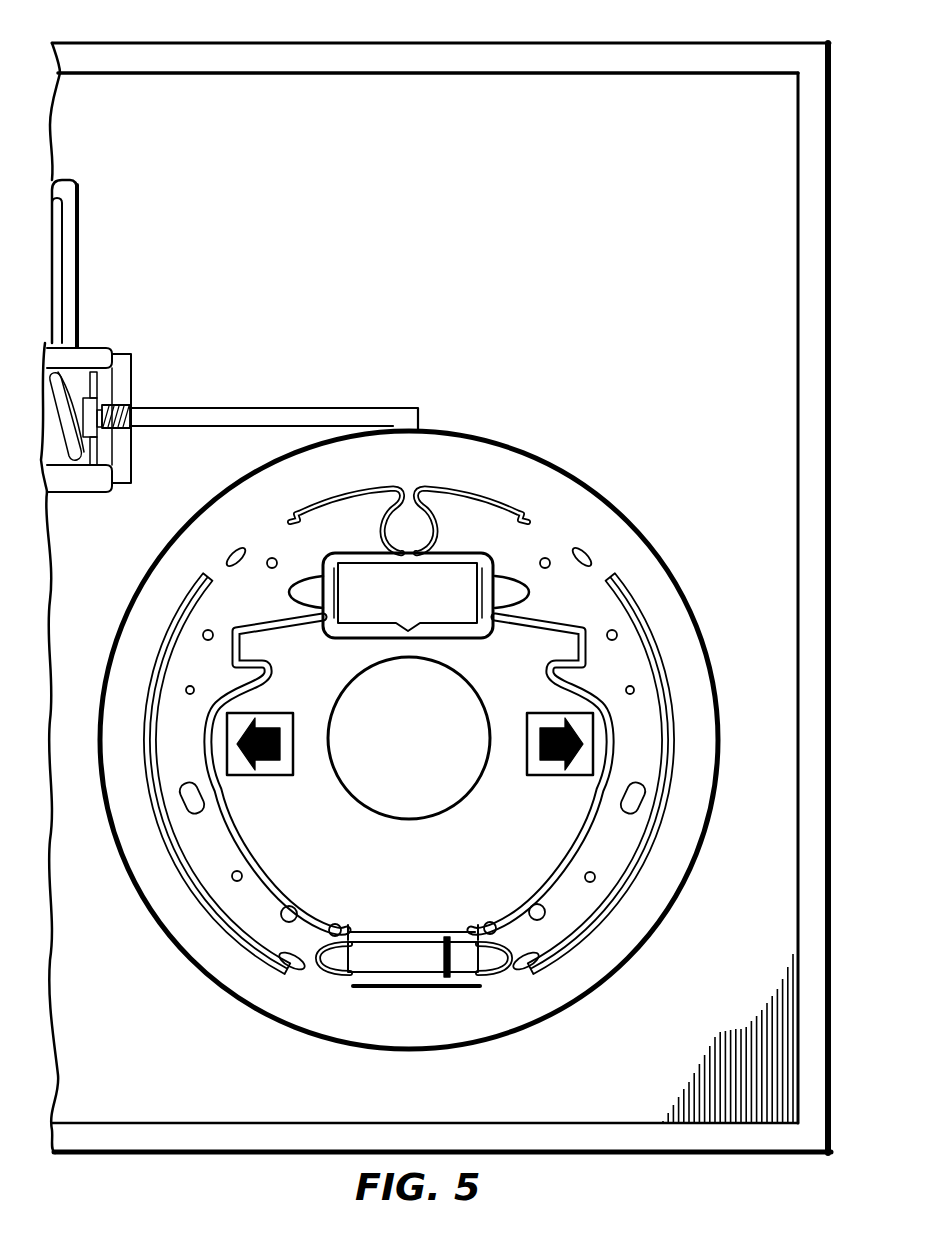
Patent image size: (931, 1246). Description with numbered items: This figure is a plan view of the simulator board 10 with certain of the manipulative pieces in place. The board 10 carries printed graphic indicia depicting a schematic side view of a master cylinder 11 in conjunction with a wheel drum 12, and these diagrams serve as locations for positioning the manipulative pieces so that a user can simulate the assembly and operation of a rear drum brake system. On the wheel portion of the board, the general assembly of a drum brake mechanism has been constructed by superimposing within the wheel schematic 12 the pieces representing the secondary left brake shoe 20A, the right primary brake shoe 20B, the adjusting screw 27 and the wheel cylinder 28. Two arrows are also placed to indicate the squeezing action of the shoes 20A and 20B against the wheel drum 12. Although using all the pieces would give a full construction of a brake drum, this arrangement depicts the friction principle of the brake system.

The simulator board 10 is at (582, 36).
The master cylinder 11 is at (80, 250).
The wheel drum 12 is at (573, 478).
The secondary left brake shoe 20A is at (190, 590).
The right primary brake shoe 20B is at (622, 588).
The adjusting screw 27 is at (405, 932).
The wheel cylinder 28 is at (493, 632).